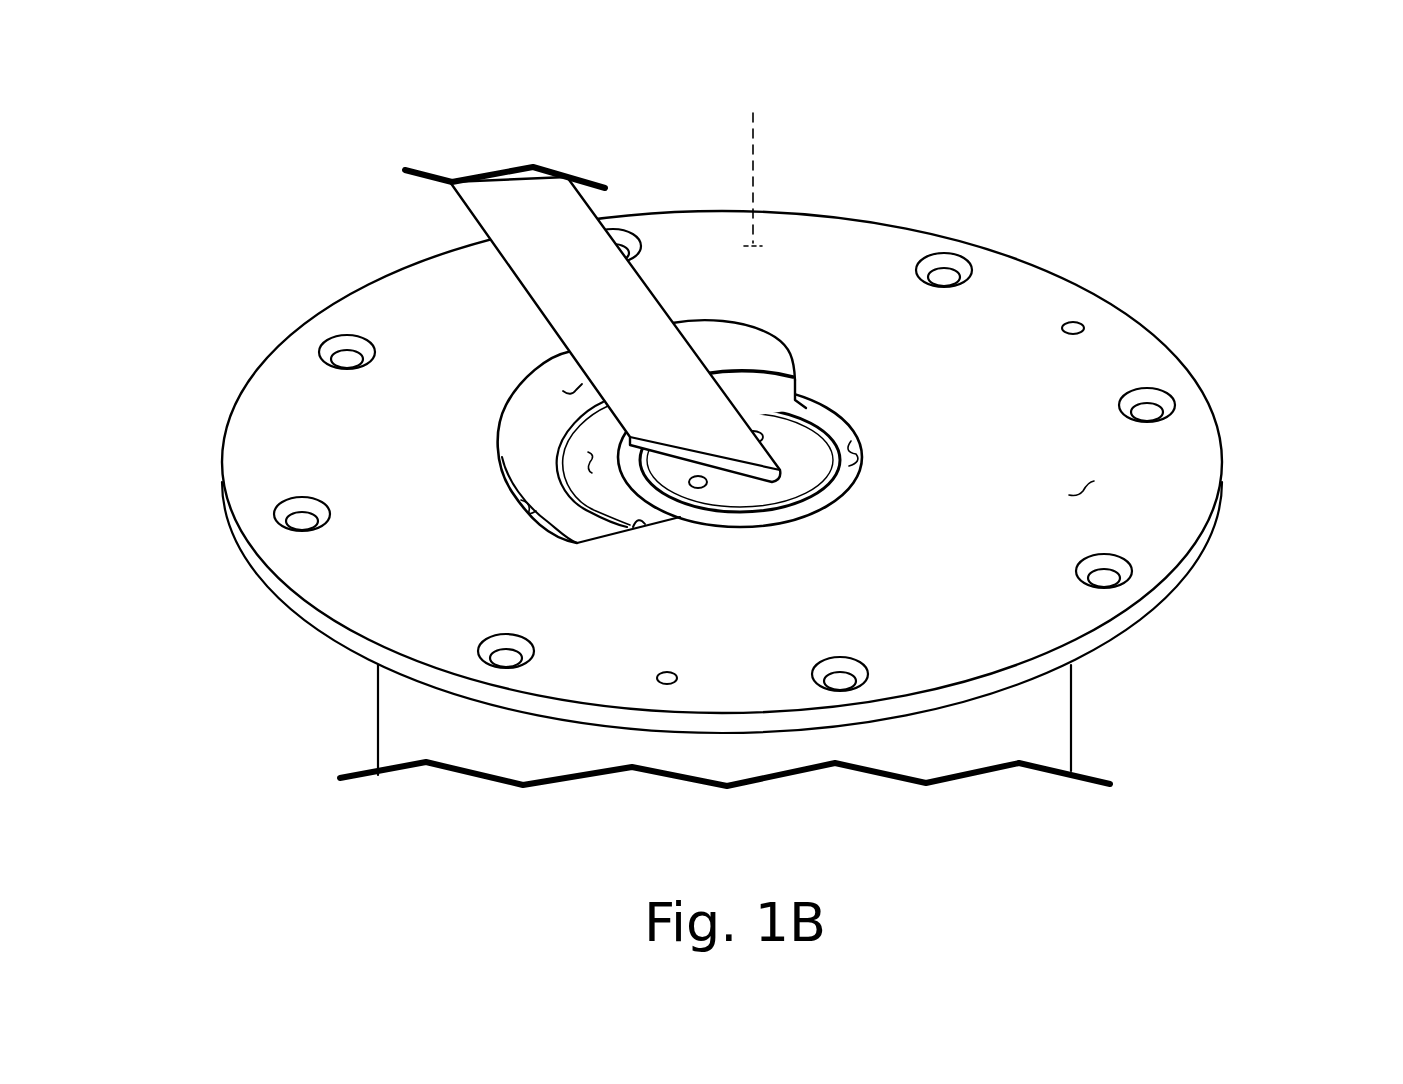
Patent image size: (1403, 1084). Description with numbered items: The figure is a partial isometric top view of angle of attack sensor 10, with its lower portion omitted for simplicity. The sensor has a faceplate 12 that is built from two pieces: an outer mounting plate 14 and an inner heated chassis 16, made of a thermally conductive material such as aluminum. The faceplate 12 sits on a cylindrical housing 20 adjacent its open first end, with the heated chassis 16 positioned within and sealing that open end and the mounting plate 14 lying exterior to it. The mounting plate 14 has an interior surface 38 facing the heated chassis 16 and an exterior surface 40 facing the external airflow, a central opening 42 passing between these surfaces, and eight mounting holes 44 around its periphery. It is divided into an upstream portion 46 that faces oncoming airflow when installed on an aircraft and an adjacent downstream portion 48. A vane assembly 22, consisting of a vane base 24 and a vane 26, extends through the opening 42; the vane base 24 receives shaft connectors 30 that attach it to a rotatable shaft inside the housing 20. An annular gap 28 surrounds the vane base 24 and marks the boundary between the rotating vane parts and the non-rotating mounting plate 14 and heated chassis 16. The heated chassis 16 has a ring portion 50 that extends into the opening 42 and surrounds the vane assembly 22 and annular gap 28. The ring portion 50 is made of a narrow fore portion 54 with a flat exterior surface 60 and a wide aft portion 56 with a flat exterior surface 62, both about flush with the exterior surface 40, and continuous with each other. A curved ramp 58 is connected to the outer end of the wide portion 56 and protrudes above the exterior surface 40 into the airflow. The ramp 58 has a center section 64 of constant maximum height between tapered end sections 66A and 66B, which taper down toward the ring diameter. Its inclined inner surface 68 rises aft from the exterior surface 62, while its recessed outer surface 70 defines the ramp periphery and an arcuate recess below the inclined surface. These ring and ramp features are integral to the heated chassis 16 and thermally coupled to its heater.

The angle of attack sensor 10 is at (213, 120).
The faceplate 12 is at (1241, 397).
The mounting plate 14 is at (1079, 603).
The heated chassis 16 is at (856, 358).
The housing 20 is at (1043, 717).
The vane assembly 22 is at (461, 332).
The vane base 24 is at (663, 484).
The vane 26 is at (485, 205).
The annular gap 28 is at (822, 434).
The shaft connectors 30 is at (700, 488).
The interior surface 38 is at (753, 164).
The exterior surface 40 is at (1085, 490).
The opening 42 is at (641, 528).
The mounting holes 44 is at (841, 683).
The upstream portion 46 is at (1188, 455).
The downstream portion 48 is at (272, 419).
The ring portion 50 is at (756, 306).
The narrow portion 54 is at (836, 486).
The wide portion 56 is at (773, 394).
The ramp 58 is at (504, 421).
The exterior surface 60 is at (856, 454).
The exterior surface 62 is at (590, 457).
The center section 64 is at (530, 392).
The tapered end section 66A is at (747, 348).
The tapered end section 66B is at (587, 527).
The inclined inner surface 68 is at (567, 393).
The recessed outer surface 70 is at (527, 503).